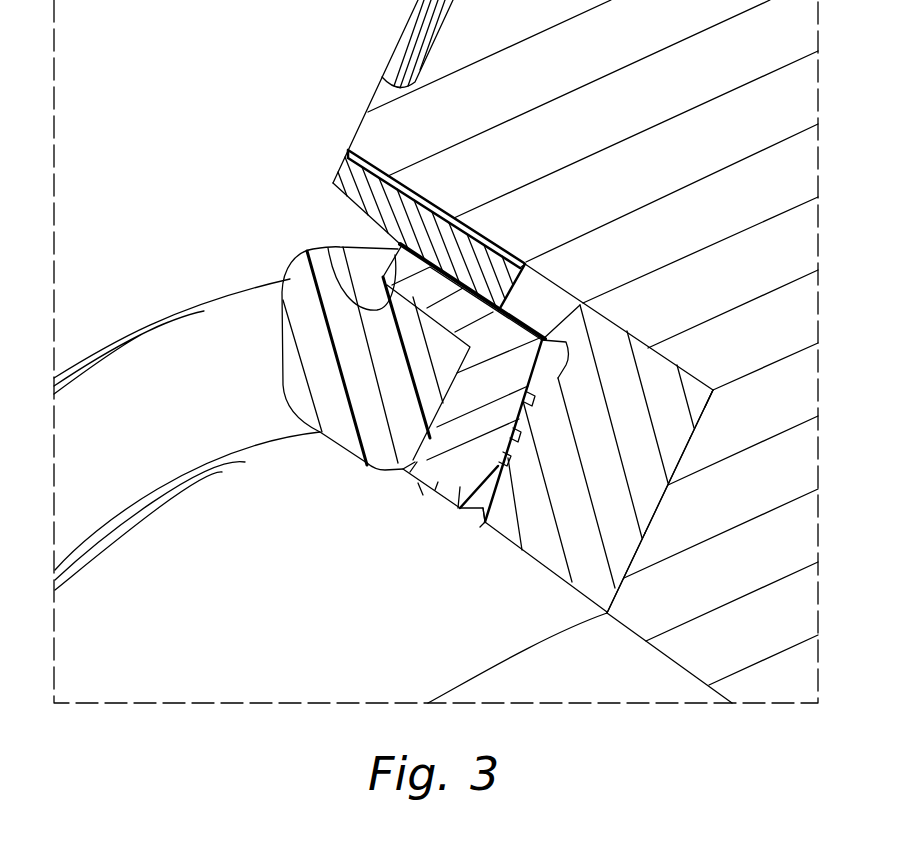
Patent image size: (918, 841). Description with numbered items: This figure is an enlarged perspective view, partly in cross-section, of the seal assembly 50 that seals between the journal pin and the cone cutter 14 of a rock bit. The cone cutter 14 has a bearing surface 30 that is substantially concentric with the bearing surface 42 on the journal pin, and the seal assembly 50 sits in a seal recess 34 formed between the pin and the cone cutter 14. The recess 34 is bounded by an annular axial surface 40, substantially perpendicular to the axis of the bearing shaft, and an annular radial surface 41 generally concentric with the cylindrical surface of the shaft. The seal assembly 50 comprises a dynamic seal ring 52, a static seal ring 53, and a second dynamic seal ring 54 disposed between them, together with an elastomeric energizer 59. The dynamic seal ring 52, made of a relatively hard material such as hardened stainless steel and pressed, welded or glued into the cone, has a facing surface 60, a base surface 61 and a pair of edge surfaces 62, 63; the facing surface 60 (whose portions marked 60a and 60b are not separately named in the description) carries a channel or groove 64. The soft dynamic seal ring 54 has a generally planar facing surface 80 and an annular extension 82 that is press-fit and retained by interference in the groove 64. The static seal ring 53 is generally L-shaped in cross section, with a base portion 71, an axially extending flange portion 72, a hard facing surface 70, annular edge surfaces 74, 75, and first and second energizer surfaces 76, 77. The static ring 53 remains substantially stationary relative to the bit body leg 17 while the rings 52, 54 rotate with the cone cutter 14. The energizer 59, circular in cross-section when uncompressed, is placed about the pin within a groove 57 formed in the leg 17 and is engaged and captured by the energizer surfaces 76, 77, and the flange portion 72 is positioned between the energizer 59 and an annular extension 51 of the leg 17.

The cone cutter 14 is at (575, 342).
The leg 17 is at (152, 95).
The bearing surface 30 is at (678, 662).
The seal assembly recess 34 is at (707, 412).
The annular surface 40 is at (662, 498).
The annular surface 41 is at (695, 375).
The bearing surface 42 is at (187, 525).
The seal assembly 50 is at (306, 200).
The annular extension 51 is at (402, 202).
The dynamic seal ring 52 is at (538, 540).
The static seal ring 53 is at (443, 430).
The dynamic seal ring 54 is at (490, 465).
The groove 57 is at (172, 353).
The energizer 59 is at (312, 347).
The facing surface 60 is at (532, 380).
The upper end of clamping face 60a is at (548, 342).
The lower end of clamping face 60b is at (478, 520).
The base surface 61 is at (648, 528).
The edge surface 62 is at (632, 328).
The edge surface 63 is at (553, 573).
The groove 64 is at (513, 458).
The facing surface 70 is at (535, 414).
The base portion 71 is at (455, 515).
The flange portion 72 is at (417, 240).
The annular edge surface 74 is at (478, 240).
The annular edge surface 75 is at (435, 490).
The first energizer surface 76 is at (420, 483).
The second energizer surface 77 is at (308, 270).
The facing surface 80 is at (505, 450).
The annular extension 82 is at (515, 466).